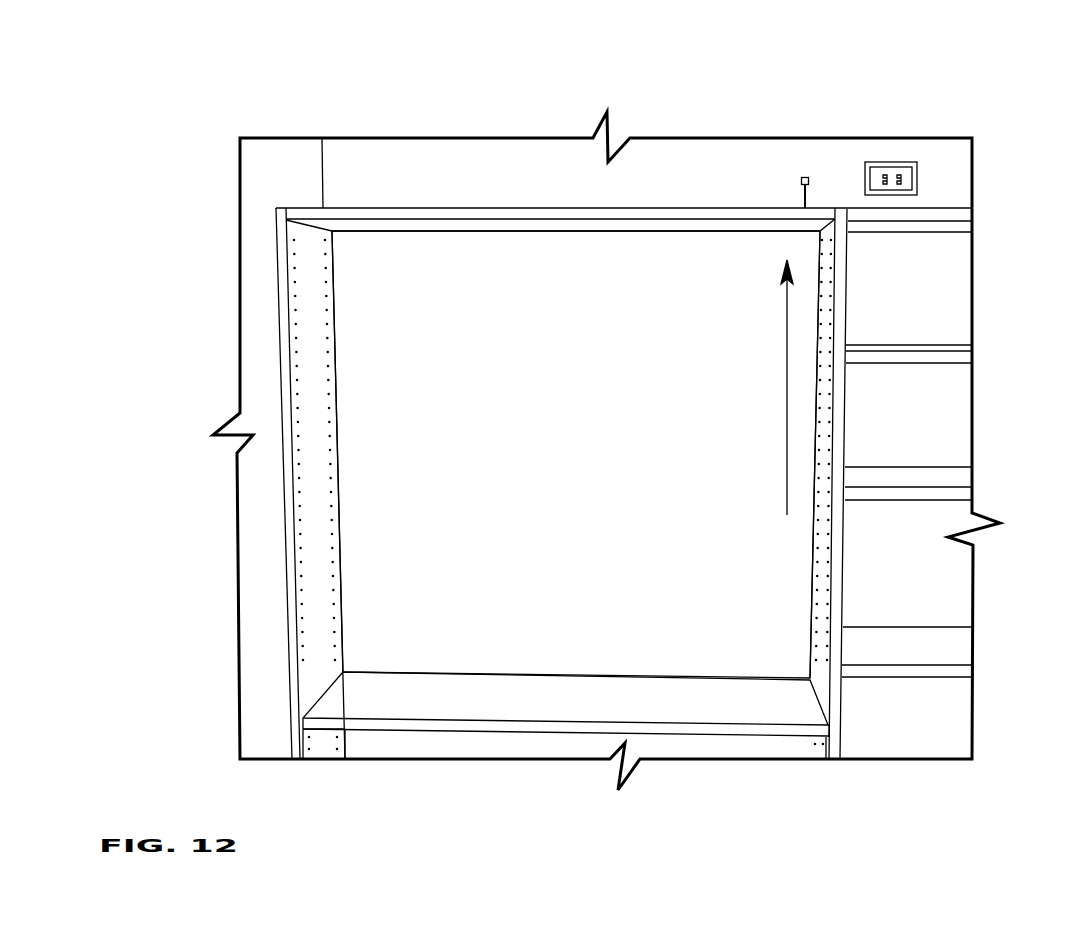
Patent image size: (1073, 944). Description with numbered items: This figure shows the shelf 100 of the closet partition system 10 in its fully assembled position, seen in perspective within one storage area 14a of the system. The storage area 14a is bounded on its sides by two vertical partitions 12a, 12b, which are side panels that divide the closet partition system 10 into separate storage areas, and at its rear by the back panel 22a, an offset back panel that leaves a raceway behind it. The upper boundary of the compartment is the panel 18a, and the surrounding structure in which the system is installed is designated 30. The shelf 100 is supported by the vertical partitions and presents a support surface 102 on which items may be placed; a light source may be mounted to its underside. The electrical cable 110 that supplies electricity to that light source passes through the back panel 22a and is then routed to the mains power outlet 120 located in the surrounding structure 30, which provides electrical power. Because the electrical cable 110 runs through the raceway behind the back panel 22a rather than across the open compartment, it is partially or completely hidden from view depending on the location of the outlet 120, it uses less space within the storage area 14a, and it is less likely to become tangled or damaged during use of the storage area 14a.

The closet partition system 10 is at (310, 116).
The wall / surrounding structure 30 is at (935, 155).
The mains power outlet 120 is at (885, 162).
The electrical cable 110 is at (803, 201).
The top panel 18a is at (379, 213).
The vertical partition 12a is at (285, 308).
The vertical partition 12b is at (847, 304).
The back panel 22a is at (539, 285).
The storage area 14a is at (376, 504).
The support surface 102 is at (505, 695).
The shelf 100 is at (721, 741).